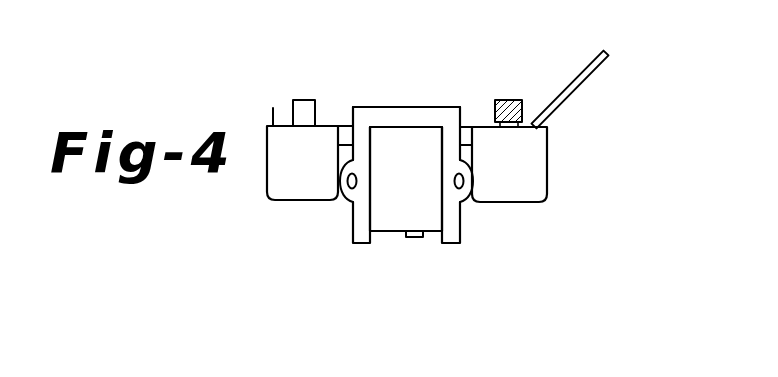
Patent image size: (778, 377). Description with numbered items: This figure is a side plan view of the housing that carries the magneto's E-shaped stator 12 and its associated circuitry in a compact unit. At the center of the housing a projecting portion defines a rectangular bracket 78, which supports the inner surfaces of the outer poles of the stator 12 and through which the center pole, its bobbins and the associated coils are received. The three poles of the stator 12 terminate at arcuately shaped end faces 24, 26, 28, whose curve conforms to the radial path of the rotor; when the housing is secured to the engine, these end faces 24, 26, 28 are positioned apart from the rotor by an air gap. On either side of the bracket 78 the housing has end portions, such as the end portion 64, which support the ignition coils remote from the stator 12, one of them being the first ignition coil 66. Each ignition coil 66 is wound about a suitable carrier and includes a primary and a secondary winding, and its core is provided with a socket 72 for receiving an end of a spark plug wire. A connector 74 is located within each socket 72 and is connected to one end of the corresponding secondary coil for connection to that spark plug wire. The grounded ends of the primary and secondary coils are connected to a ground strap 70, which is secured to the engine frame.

The stator 12 is at (392, 222).
The arcuately shaped end face 24 is at (358, 243).
The arcuately shaped end face 26 is at (413, 237).
The arcuately shaped end face 28 is at (447, 243).
The end portion 64 is at (508, 202).
The first ignition coil 66 is at (288, 200).
The ground strap 70 is at (580, 87).
The socket 72 is at (530, 118).
The connector 74 is at (512, 100).
The rectangular bracket 78 is at (425, 210).